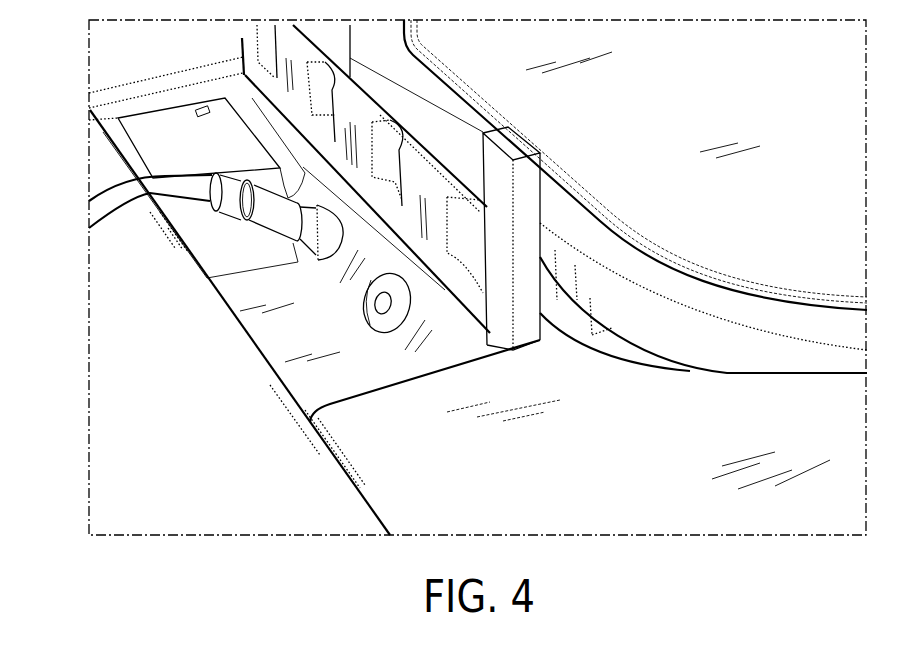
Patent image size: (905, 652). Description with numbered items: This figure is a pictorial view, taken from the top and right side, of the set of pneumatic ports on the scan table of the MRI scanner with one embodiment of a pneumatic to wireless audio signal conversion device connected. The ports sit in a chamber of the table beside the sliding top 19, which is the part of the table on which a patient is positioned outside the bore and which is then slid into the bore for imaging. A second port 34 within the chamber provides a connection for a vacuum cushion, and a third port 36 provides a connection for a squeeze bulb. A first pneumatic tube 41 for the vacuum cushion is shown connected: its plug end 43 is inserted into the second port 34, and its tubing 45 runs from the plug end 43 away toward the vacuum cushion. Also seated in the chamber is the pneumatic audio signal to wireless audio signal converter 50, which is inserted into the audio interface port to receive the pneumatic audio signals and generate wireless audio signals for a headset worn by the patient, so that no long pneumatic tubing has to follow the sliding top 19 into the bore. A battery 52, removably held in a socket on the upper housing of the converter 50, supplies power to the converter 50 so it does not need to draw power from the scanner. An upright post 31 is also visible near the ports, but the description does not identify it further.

The sliding top 19 is at (632, 212).
The post 31 is at (527, 182).
The second port 34 is at (300, 268).
The third port 36 is at (373, 327).
The first pneumatic tube 41 is at (130, 207).
The plug end 43 is at (245, 231).
The tubing 45 is at (101, 216).
The pneumatic audio signal to wireless audio signal converter 50 is at (157, 112).
The battery 52 is at (138, 125).